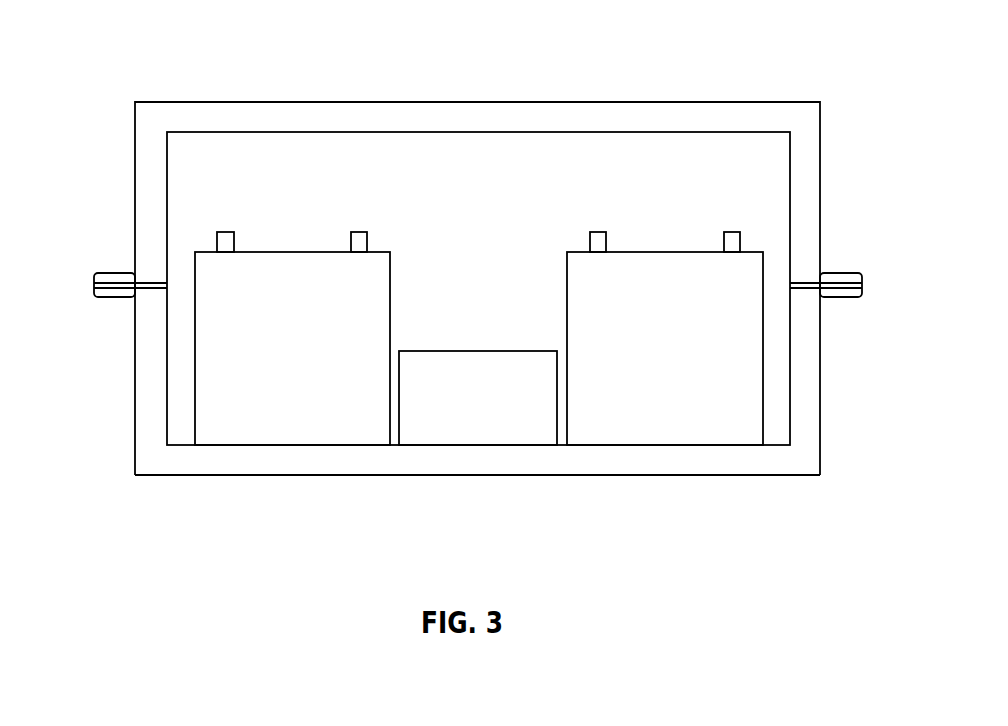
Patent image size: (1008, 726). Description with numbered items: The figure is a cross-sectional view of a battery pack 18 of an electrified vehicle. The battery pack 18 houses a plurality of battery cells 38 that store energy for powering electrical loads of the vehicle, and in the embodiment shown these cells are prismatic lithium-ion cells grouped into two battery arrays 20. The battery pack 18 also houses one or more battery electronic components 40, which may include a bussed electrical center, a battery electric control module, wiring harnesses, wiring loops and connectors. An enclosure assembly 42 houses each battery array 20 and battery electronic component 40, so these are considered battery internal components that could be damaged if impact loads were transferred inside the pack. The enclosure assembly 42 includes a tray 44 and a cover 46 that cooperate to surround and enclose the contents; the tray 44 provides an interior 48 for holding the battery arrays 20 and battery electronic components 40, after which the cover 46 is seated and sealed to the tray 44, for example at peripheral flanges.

The battery pack 18 is at (811, 71).
The battery array 20 is at (290, 241).
The battery cell 38 is at (220, 351).
The battery electronic component 40 is at (479, 425).
The enclosure assembly 42 is at (134, 147).
The tray 44 is at (280, 477).
The cover 46 is at (222, 113).
The interior 48 is at (494, 298).